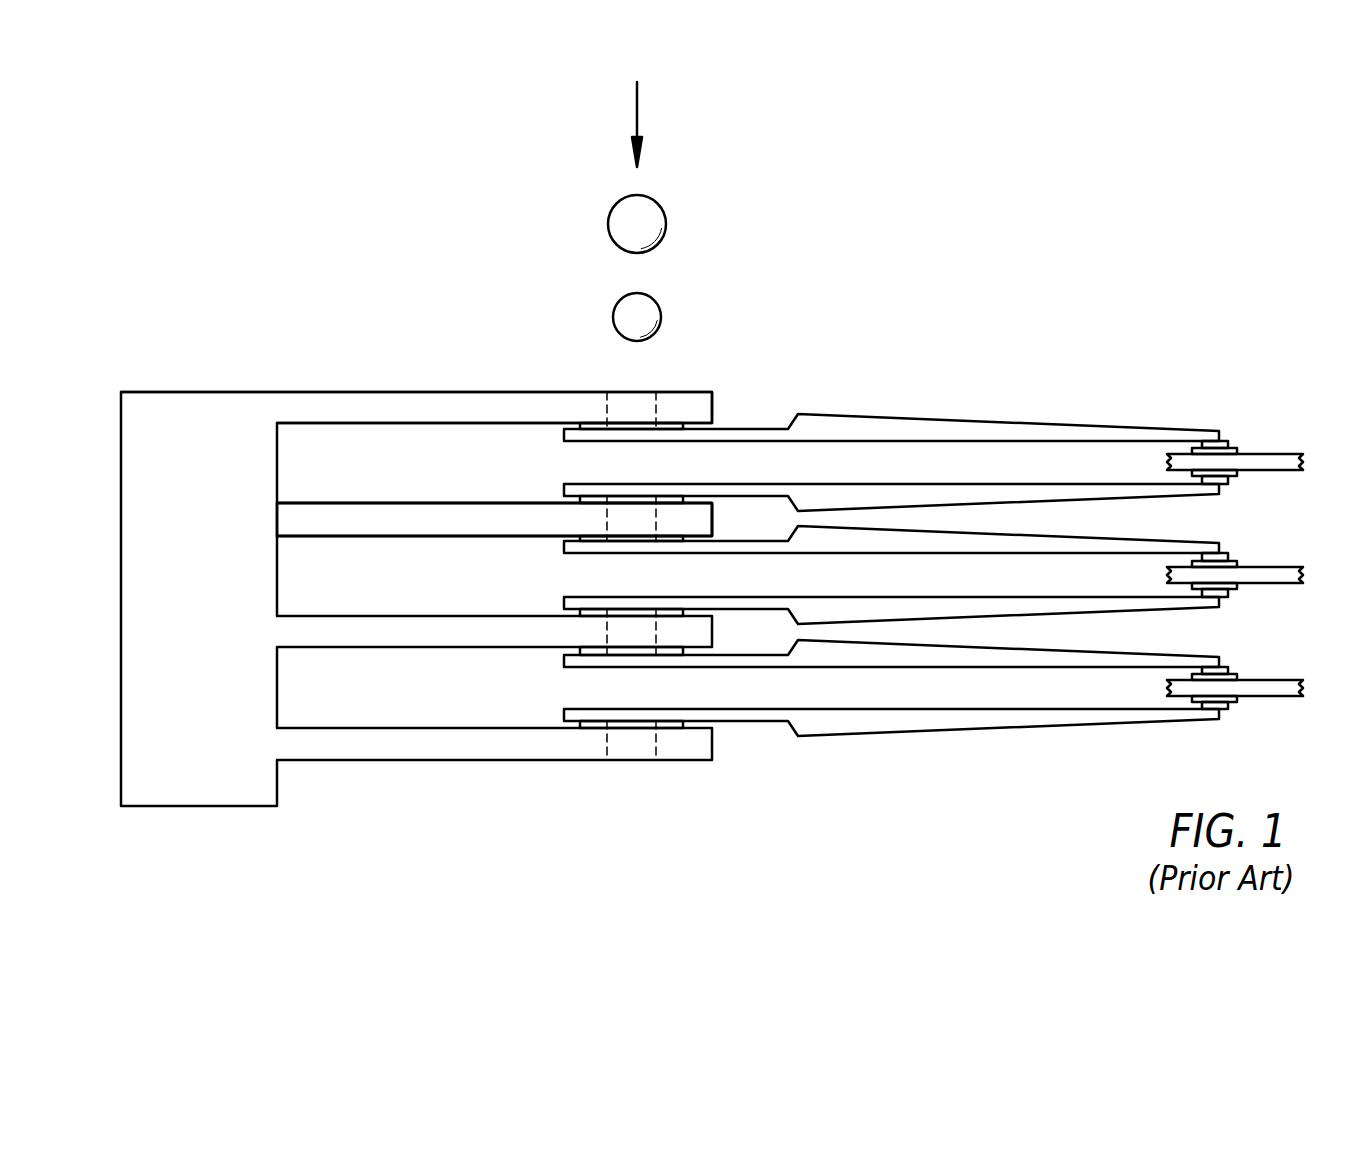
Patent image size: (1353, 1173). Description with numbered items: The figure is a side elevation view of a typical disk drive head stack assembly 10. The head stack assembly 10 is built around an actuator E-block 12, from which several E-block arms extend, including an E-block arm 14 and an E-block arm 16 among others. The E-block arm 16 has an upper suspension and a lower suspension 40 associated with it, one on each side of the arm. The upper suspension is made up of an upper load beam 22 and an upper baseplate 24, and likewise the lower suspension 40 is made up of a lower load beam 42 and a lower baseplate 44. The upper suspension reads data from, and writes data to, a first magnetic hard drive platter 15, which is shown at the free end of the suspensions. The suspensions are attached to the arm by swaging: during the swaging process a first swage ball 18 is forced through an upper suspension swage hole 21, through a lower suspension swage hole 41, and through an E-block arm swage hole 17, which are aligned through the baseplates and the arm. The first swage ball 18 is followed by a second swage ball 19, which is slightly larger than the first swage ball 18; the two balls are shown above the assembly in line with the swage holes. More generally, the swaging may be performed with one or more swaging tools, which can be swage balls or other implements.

The head stack assembly 10 is at (1098, 278).
The actuator E-block 12 is at (173, 392).
The E-block arm 14 is at (423, 392).
The first magnetic hard drive platter 15 is at (1277, 455).
The E-block arm 16 is at (415, 503).
The E-block arm swage hole 17 is at (618, 520).
The first swage ball 18 is at (659, 310).
The second swage ball 19 is at (660, 210).
The upper suspension swage hole 21 is at (626, 483).
The upper load beam 22 is at (891, 480).
The upper baseplate 24 is at (580, 500).
The lower suspension 40 is at (947, 611).
The lower suspension swage hole 41 is at (637, 554).
The lower load beam 42 is at (891, 559).
The lower baseplate 44 is at (580, 538).